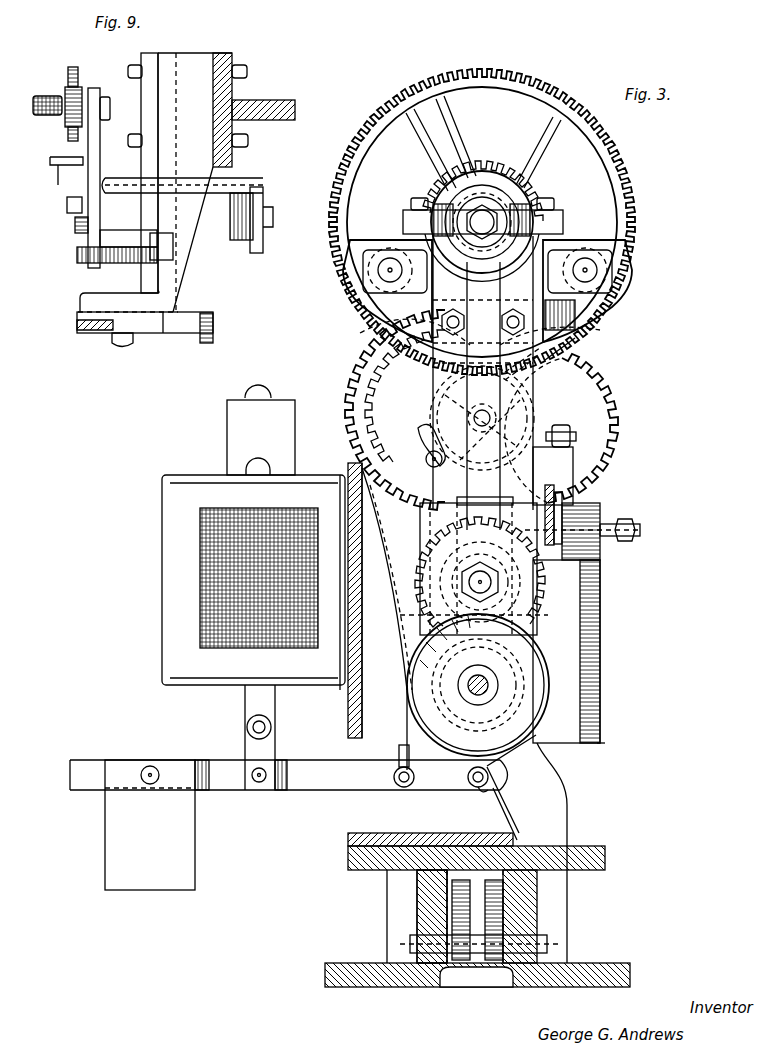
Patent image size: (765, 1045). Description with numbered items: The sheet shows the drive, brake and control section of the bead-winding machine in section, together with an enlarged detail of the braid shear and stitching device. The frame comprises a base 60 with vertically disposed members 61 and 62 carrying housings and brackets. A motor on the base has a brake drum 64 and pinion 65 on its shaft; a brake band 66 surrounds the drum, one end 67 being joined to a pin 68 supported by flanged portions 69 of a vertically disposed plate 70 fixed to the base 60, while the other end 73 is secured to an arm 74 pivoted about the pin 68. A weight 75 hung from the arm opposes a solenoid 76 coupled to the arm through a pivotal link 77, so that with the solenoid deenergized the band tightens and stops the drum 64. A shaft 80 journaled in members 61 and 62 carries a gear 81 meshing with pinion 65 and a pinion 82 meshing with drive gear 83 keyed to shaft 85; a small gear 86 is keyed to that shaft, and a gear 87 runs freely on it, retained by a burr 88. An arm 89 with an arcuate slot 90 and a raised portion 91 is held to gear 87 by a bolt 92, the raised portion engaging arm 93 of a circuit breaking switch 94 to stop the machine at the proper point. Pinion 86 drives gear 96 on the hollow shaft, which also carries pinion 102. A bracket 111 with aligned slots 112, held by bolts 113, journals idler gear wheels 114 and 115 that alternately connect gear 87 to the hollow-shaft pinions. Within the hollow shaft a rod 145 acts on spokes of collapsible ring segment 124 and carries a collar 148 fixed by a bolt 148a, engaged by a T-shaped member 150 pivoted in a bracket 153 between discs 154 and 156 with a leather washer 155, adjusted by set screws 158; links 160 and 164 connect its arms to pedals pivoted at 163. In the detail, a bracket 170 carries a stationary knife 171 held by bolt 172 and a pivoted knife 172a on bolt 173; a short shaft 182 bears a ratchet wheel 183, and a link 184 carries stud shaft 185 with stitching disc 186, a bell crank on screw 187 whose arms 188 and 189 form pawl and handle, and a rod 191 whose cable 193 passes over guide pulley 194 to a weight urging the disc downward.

In FIG. 3, the base 60 is at (530, 903).
In FIG. 3, the vertically disposed member 61 is at (467, 400).
In FIG. 9, the vertically disposed member 62 is at (262, 100).
In FIG. 3, the brake drum 64 is at (560, 710).
In FIG. 3, the pinion 65 is at (460, 685).
In FIG. 3, the brake band 66 is at (545, 667).
In FIG. 3, the end of brake band 67 is at (490, 774).
In FIG. 3, the pin 68 is at (495, 790).
In FIG. 3, the flanged portions 69 is at (348, 726).
In FIG. 3, the vertically disposed plate 70 is at (348, 708).
In FIG. 3, the other end of brake band 73 is at (400, 751).
In FIG. 3, the arm 74 is at (312, 790).
In FIG. 3, the weight 75 is at (118, 840).
In FIG. 3, the solenoid 76 is at (205, 582).
In FIG. 3, the pivotal link 77 is at (246, 708).
In FIG. 3, the shaft 80 is at (468, 582).
In FIG. 3, the gear 81 is at (420, 600).
In FIG. 3, the pinion 82 is at (420, 616).
In FIG. 3, the drive gear 83 is at (600, 457).
In FIG. 3, the shaft 85 is at (474, 418).
In FIG. 3, the small gear 86 is at (440, 386).
In FIG. 3, the gear 87 is at (580, 398).
In FIG. 3, the burr 88 is at (505, 440).
In FIG. 3, the arm 89 is at (527, 375).
In FIG. 3, the arcuate slot 90 is at (424, 437).
In FIG. 3, the raised portion 91 is at (585, 357).
In FIG. 3, the bolt 92 is at (426, 460).
In FIG. 3, the arm of circuit breaking switch 93 is at (578, 436).
In FIG. 3, the circuit breaking switch 94 is at (560, 474).
In FIG. 3, the gear 96 is at (618, 172).
In FIG. 3, the pinion 102 is at (484, 170).
In FIG. 3, the bracket 111 is at (366, 295).
In FIG. 3, the aligned slots 112 is at (358, 315).
In FIG. 3, the bolts 113 is at (380, 330).
In FIG. 3, the idler gear wheel 114 is at (345, 278).
In FIG. 3, the idler gear wheel 115 is at (625, 262).
In FIG. 9, the collapsible ring segment 124 is at (214, 322).
In FIG. 3, the rod 145 is at (482, 222).
In FIG. 3, the collar 148 is at (498, 210).
In FIG. 3, the bolt 148a is at (500, 222).
In FIG. 3, the T-shaped member 150 is at (475, 352).
In FIG. 3, the bracket 153 is at (602, 553).
In FIG. 3, the disc 154 is at (563, 512).
In FIG. 3, the leather washer 155 is at (608, 527).
In FIG. 3, the disc 156 is at (556, 497).
In FIG. 3, the set screws 158 is at (634, 532).
In FIG. 3, the link 160 is at (515, 816).
In FIG. 3, the pedal pivot 163 is at (548, 943).
In FIG. 3, the link 164 is at (422, 896).
In FIG. 9, the bracket 170 is at (205, 58).
In FIG. 9, the stationary knife portion 171 is at (78, 313).
In FIG. 9, the bolt 172 is at (80, 326).
In FIG. 9, the pivoted knife portion 172a is at (163, 335).
In FIG. 9, the bolt 173 is at (122, 347).
In FIG. 9, the short shaft 182 is at (100, 265).
In FIG. 9, the ratchet wheel 183 is at (80, 262).
In FIG. 9, the link 184 is at (96, 92).
In FIG. 9, the stud shaft 185 is at (45, 96).
In FIG. 9, the disc 186 is at (73, 68).
In FIG. 9, the short screw 187 is at (70, 208).
In FIG. 9, the arm of bell crank 188 is at (77, 226).
In FIG. 9, the arm of bell crank 189 is at (62, 172).
In FIG. 9, the rod 191 is at (191, 180).
In FIG. 9, the cable 193 is at (264, 248).
In FIG. 9, the guide pulley 194 is at (270, 218).